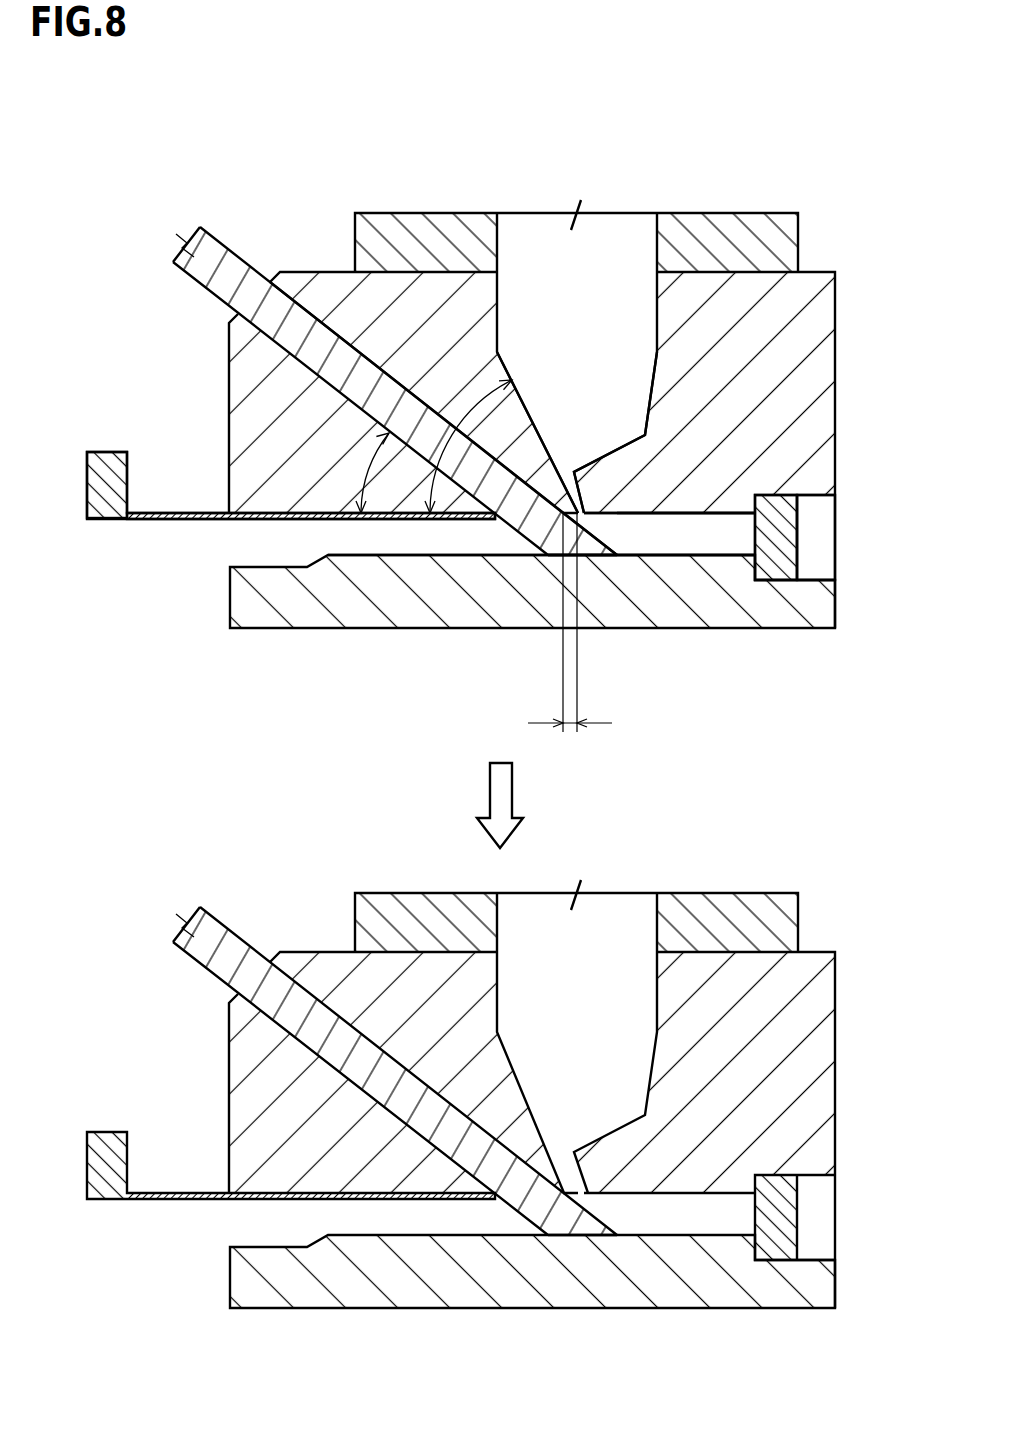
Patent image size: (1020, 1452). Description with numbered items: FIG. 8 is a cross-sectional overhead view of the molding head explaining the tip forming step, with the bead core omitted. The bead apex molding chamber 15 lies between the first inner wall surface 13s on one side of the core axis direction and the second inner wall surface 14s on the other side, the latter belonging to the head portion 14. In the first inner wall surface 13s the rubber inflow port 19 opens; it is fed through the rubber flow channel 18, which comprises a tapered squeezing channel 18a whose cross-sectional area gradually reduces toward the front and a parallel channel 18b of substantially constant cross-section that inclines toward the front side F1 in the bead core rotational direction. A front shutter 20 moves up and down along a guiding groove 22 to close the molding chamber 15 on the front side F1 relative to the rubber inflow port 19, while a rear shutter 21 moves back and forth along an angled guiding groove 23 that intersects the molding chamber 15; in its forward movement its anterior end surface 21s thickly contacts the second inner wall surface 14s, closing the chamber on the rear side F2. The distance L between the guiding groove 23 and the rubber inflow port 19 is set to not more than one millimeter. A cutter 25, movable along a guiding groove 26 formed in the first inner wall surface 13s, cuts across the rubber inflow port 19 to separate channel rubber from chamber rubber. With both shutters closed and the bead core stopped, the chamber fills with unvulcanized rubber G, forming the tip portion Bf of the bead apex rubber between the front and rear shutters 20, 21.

The first inner wall surface 13s is at (680, 517).
The head portion 14 is at (228, 598).
The second inner wall surface 14s is at (420, 553).
The bead apex molding chamber 15 is at (736, 538).
The rubber flow channel 18 is at (717, 133).
The squeezing channel 18a is at (538, 432).
The parallel channel 18b is at (590, 490).
The rubber inflow port 19 is at (613, 551).
The front shutter 20 is at (777, 528).
The rear shutter 21 is at (285, 323).
The anterior end surface 21s is at (592, 556).
The guiding groove 22 is at (833, 507).
The guiding groove 23 is at (340, 340).
The cutter 25 is at (152, 518).
The guiding groove 26 is at (265, 516).
The unvulcanized rubber G is at (537, 268).
The tip portion Bf is at (626, 1138).
The front side F1 is at (892, 540).
The rear side F2 is at (79, 540).
The distance L is at (570, 635).